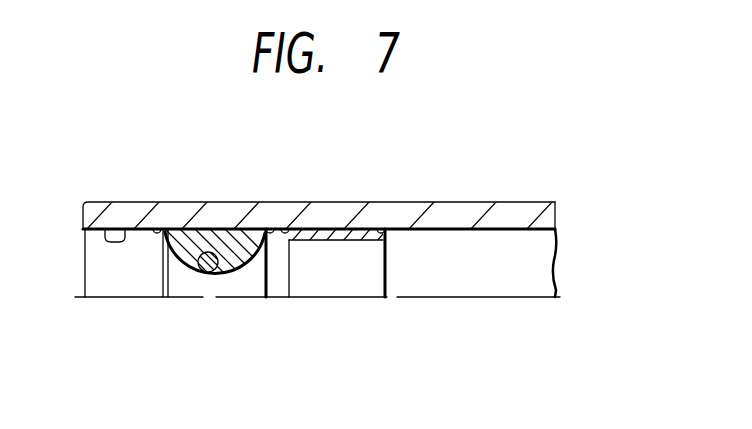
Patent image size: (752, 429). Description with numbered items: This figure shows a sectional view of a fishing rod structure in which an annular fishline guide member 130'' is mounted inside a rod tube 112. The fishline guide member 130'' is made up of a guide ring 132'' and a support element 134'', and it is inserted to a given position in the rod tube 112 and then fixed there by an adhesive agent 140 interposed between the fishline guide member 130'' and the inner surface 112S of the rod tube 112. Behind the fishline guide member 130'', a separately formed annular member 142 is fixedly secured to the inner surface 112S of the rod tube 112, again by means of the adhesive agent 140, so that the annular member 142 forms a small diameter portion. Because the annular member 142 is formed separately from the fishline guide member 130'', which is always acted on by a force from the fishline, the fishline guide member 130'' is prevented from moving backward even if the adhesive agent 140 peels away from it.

The rod tube 112 is at (443, 213).
The inner surface of the rod tube 112S is at (129, 240).
The adhesive agent 140 is at (285, 229).
The annular fishline guide member 130'' is at (216, 317).
The guide ring 132'' is at (187, 302).
The support element 134'' is at (223, 293).
The annular member 142 is at (340, 240).